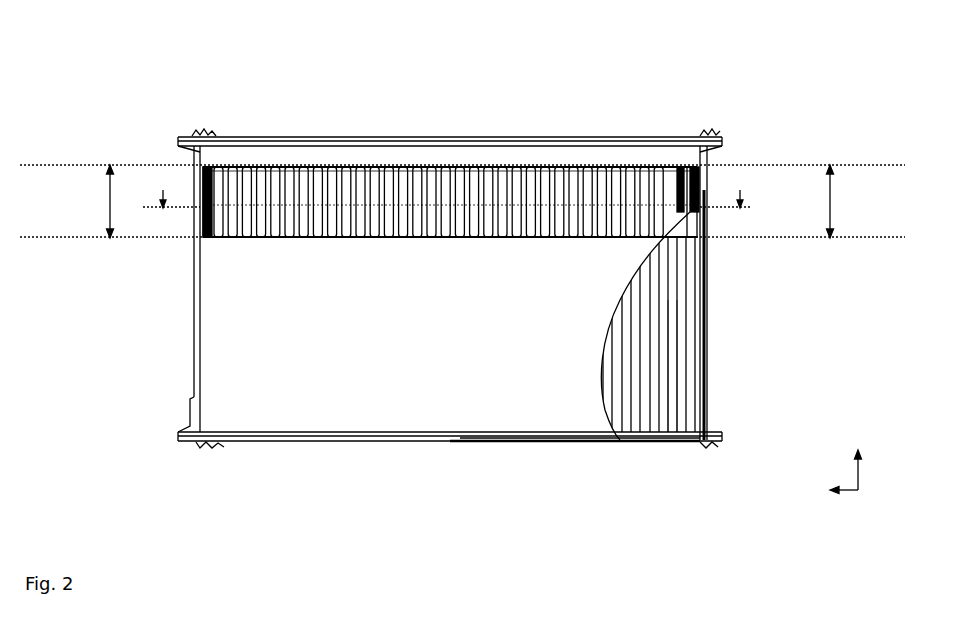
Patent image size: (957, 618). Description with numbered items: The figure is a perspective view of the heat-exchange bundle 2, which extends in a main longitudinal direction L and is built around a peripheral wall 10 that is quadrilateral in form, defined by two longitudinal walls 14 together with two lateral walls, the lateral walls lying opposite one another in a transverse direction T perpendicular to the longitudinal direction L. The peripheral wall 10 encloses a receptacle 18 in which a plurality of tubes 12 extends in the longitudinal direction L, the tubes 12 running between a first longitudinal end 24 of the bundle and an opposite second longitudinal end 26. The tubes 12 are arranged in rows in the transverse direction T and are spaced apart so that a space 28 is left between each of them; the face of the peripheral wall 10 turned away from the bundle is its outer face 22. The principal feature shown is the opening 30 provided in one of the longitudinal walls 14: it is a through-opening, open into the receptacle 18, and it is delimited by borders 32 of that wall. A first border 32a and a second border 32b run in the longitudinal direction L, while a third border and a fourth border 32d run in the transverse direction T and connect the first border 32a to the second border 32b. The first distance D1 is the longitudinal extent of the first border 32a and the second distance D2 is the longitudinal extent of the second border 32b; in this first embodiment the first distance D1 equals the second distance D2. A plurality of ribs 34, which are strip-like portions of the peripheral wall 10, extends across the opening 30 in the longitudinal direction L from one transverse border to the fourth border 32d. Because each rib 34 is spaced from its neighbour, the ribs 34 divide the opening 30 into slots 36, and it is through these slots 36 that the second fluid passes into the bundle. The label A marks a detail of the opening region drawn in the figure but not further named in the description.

The heat-exchange bundle 2 is at (767, 86).
The peripheral wall 10 is at (215, 340).
The tubes 12 is at (683, 353).
The longitudinal walls 14 is at (575, 418).
The receptacle 18 is at (706, 279).
The outer face 22 is at (470, 407).
The first longitudinal end 24 is at (517, 137).
The second longitudinal end 26 is at (283, 442).
The space 28 is at (678, 396).
The opening 30 is at (597, 160).
The borders 32 is at (322, 203).
The first border 32a is at (205, 203).
The second border 32b is at (700, 183).
The fourth border 32d is at (242, 237).
The ribs 34 is at (397, 190).
The slots 36 is at (249, 190).
The distance A is at (450, 189).
The first distance D1 is at (108, 203).
The second distance D2 is at (833, 199).
The longitudinal direction L is at (858, 460).
The transverse direction T is at (833, 492).